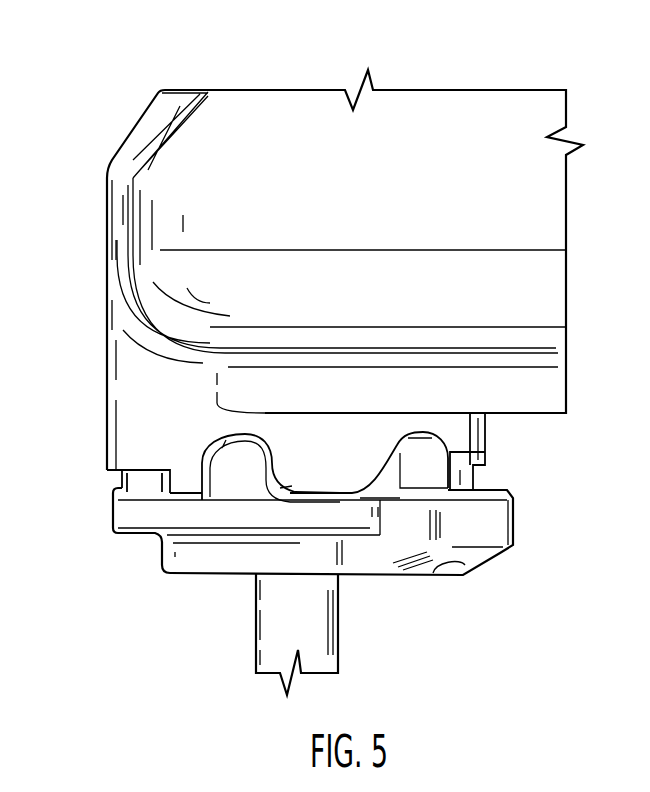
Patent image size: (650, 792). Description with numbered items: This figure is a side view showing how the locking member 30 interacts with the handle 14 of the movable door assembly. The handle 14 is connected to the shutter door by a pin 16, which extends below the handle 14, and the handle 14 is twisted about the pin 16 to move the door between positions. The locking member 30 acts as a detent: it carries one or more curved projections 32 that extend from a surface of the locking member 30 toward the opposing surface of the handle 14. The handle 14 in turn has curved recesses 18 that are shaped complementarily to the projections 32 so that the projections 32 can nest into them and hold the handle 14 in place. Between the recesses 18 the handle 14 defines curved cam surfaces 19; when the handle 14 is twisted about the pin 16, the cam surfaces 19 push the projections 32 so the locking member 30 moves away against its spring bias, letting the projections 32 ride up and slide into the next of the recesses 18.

The handle 14 is at (105, 168).
The pin 16 is at (288, 633).
The recesses 18 is at (437, 452).
The cam surfaces 19 is at (395, 455).
The locking member 30 is at (118, 513).
The projections 32 is at (237, 467).